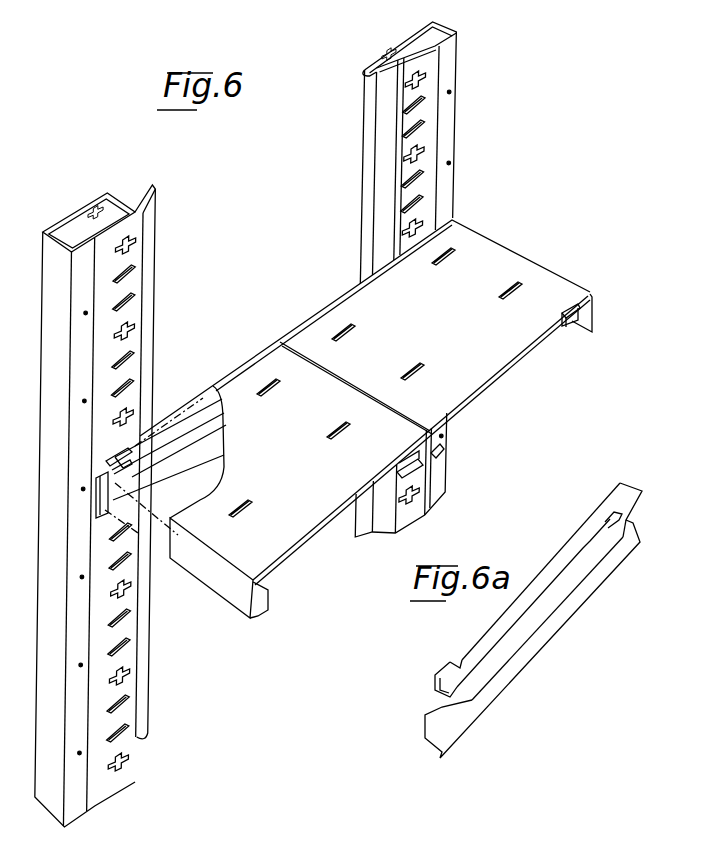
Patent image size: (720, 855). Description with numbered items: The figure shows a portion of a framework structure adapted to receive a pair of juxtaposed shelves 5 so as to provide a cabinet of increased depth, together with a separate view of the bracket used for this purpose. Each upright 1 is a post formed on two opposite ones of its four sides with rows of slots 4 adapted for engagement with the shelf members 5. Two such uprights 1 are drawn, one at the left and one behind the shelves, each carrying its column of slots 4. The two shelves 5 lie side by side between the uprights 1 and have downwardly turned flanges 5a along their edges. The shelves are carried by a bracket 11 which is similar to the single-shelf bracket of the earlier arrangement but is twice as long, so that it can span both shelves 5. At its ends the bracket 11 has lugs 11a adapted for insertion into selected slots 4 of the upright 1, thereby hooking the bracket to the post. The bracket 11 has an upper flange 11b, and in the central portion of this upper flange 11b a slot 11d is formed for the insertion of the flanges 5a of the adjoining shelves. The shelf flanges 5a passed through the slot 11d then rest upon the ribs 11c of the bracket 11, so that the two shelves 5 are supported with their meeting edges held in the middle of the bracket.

In FIG. 6, the upright 1 is at (127, 289).
In FIG. 6, the slots 4 is at (128, 358).
In FIG. 6, the shelf 5 is at (468, 341).
In FIG. 6, the flange 5a is at (422, 471).
In FIG. 6A, the bracket 11 is at (512, 652).
In FIG. 6A, the lug 11a is at (438, 673).
In FIG. 6A, the upper flange 11b is at (541, 590).
In FIG. 6A, the rib 11c is at (572, 610).
In FIG. 6A, the slot 11d is at (602, 516).